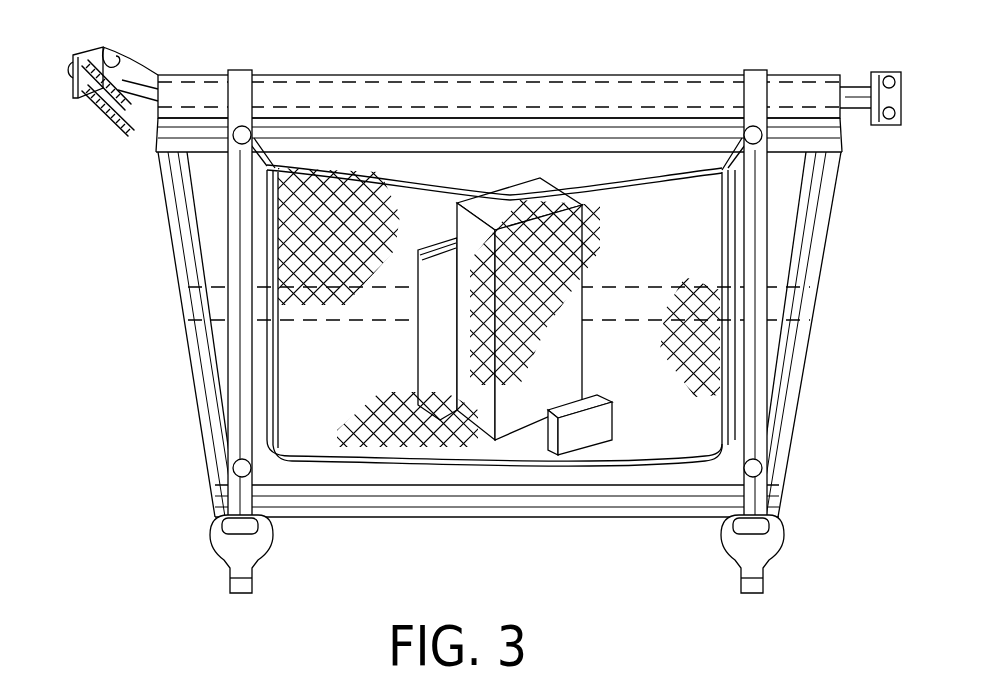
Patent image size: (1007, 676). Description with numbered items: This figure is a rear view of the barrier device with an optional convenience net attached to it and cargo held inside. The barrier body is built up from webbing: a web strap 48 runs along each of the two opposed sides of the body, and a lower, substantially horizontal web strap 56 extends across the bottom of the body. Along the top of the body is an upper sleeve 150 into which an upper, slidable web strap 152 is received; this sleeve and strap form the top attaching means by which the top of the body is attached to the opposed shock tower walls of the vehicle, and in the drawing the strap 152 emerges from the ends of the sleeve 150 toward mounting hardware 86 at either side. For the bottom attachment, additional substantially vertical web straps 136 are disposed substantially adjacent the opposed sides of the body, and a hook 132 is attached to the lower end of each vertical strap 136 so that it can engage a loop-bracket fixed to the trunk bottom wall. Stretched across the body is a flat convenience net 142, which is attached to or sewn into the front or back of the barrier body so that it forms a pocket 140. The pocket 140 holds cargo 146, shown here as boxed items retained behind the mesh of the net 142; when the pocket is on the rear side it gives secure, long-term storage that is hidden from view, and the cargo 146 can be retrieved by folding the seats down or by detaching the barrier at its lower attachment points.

The web strap 48 is at (207, 373).
The lower, substantially horizontal web strap 56 is at (457, 502).
The mounting bracket 86 is at (100, 50).
The hook 132 is at (253, 585).
The substantially vertical web strap 136 is at (230, 525).
The pocket 140 is at (633, 177).
The convenience net 142 is at (332, 213).
The cargo 146 is at (517, 420).
The upper sleeve 150 is at (448, 77).
The upper, slidable web strap 152 is at (148, 105).